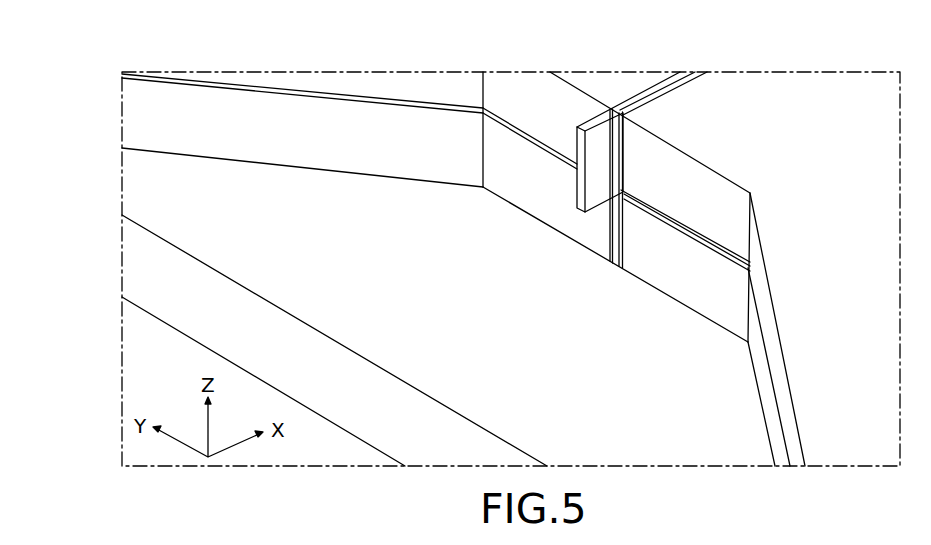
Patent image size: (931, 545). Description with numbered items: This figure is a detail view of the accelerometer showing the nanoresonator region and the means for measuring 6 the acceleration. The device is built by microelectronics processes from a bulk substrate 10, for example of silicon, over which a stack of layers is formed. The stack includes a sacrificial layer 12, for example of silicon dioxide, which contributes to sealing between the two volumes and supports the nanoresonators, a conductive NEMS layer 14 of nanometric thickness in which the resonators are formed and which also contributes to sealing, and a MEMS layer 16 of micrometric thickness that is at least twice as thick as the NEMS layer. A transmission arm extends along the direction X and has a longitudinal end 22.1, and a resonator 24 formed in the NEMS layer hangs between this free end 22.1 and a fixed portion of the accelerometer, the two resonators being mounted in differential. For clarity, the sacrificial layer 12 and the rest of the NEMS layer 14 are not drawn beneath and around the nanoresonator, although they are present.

The means for measuring 6 is at (527, 225).
The substrate 10 is at (128, 195).
The sacrificial layer 12 is at (135, 108).
The NEMS layer 14 is at (138, 72).
The MEMS layer 16 is at (860, 89).
The longitudinal end of transmission arm 22.1 is at (602, 145).
The resonator 24 is at (563, 214).